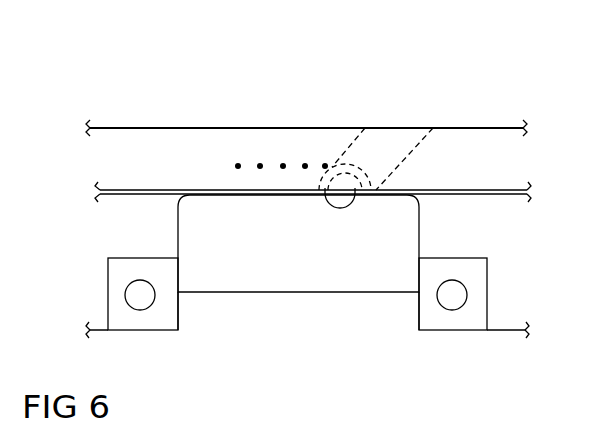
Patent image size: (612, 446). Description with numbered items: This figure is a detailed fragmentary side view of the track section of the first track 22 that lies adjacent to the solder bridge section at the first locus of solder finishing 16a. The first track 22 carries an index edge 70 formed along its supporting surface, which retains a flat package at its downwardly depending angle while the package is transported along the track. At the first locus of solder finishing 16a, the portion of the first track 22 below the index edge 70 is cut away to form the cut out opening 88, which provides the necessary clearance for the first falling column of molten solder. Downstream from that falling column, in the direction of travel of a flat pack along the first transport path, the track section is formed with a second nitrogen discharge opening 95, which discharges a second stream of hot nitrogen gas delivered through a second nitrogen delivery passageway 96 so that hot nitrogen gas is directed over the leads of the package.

The first locus of solder finishing 16a is at (432, 75).
The first track 22 is at (213, 128).
The index edge 70 is at (138, 190).
The cut out opening 88 is at (237, 277).
The second N2 discharge opening 95 is at (347, 208).
The second N2 delivery passageway 96 is at (418, 147).